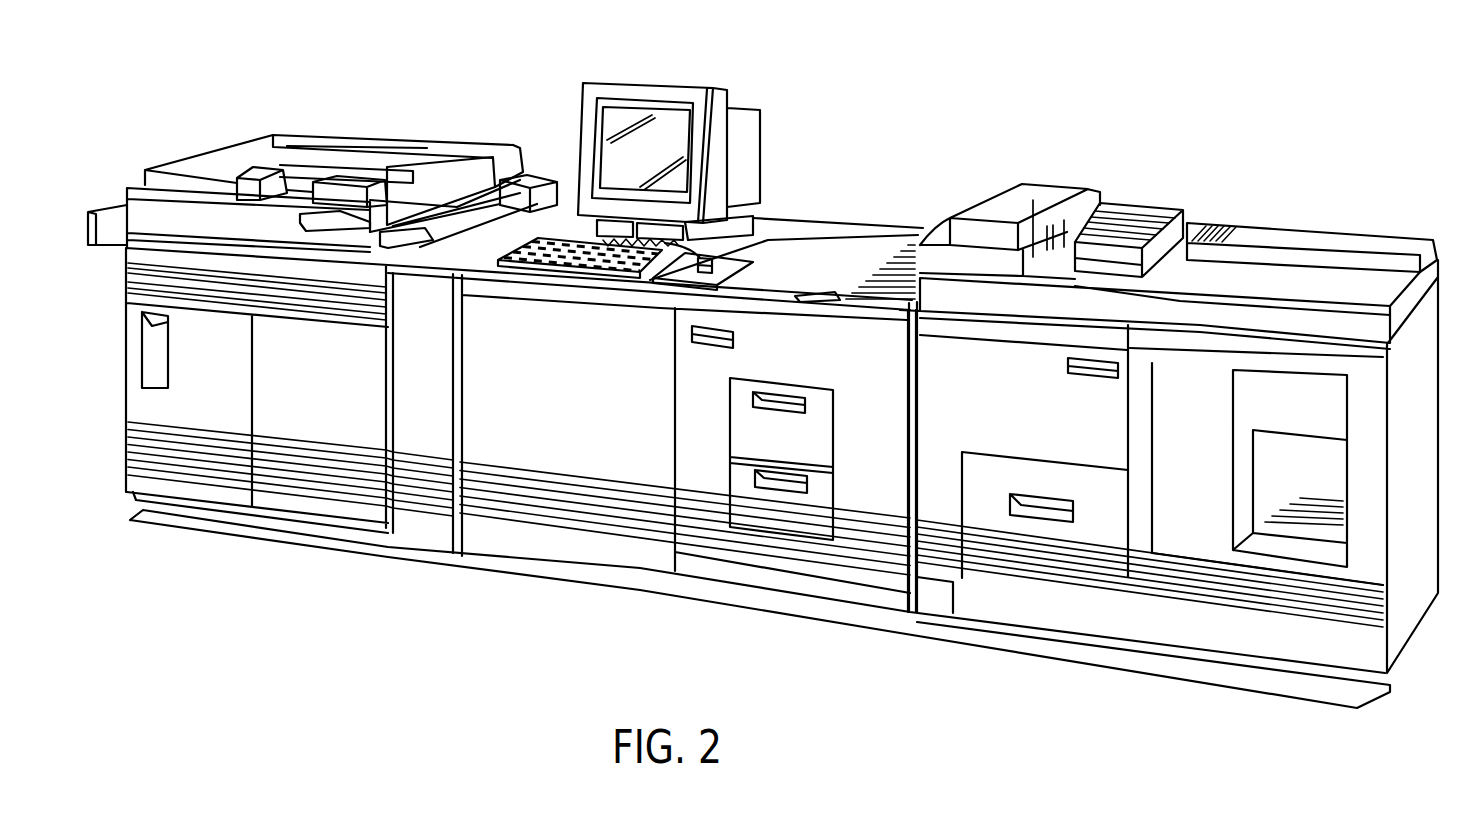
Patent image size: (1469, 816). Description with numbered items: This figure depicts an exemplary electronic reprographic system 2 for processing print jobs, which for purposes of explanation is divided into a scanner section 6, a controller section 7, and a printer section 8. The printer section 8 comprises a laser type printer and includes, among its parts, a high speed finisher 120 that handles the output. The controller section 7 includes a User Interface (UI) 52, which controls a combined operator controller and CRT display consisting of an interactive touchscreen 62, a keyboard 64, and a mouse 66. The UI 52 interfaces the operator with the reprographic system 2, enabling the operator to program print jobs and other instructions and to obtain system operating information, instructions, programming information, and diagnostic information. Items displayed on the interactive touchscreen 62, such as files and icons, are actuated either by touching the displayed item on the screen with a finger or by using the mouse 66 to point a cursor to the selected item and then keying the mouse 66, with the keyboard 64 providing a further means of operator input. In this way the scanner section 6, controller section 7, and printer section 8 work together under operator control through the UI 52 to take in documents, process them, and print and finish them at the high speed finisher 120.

The electronic reprographic system 2 is at (903, 72).
The scanner section 6 is at (383, 122).
The controller section 7 is at (112, 397).
The printer section 8 is at (1375, 740).
The User Interface (UI) 52 is at (645, 136).
The interactive touchscreen 62 is at (612, 160).
The keyboard 64 is at (568, 272).
The mouse 66 is at (672, 272).
The high speed finisher 120 is at (1283, 218).